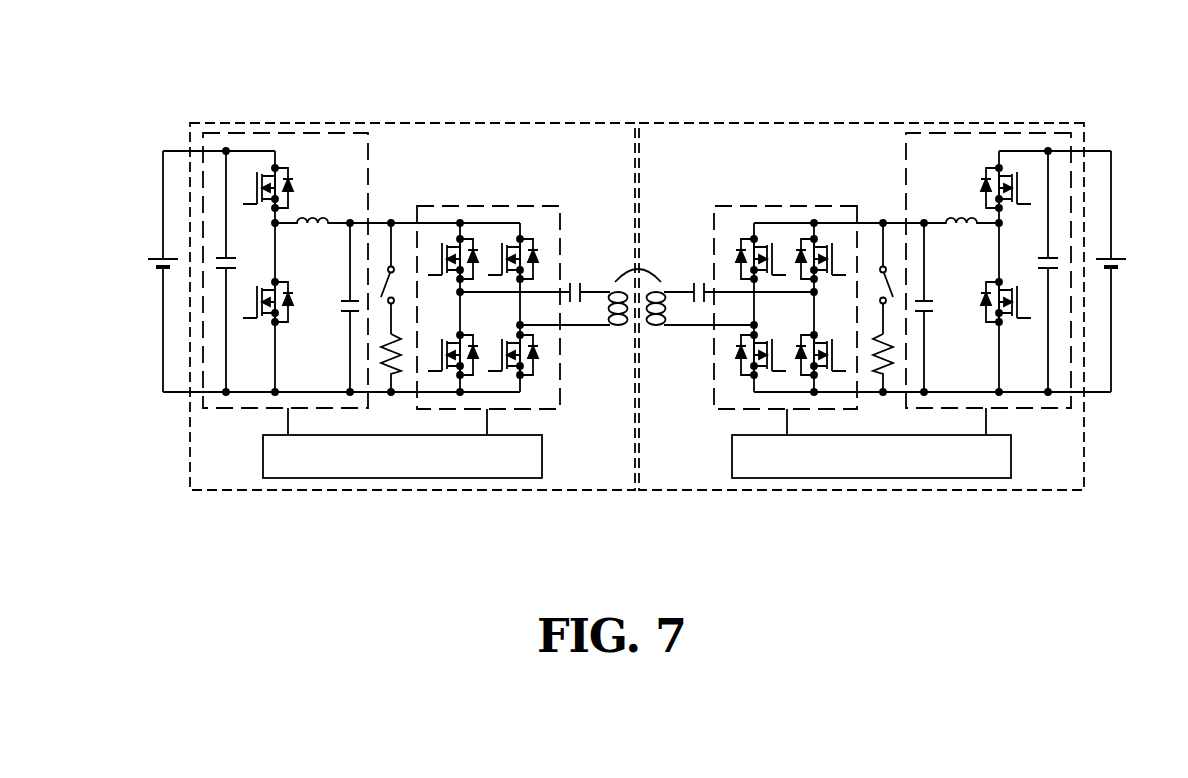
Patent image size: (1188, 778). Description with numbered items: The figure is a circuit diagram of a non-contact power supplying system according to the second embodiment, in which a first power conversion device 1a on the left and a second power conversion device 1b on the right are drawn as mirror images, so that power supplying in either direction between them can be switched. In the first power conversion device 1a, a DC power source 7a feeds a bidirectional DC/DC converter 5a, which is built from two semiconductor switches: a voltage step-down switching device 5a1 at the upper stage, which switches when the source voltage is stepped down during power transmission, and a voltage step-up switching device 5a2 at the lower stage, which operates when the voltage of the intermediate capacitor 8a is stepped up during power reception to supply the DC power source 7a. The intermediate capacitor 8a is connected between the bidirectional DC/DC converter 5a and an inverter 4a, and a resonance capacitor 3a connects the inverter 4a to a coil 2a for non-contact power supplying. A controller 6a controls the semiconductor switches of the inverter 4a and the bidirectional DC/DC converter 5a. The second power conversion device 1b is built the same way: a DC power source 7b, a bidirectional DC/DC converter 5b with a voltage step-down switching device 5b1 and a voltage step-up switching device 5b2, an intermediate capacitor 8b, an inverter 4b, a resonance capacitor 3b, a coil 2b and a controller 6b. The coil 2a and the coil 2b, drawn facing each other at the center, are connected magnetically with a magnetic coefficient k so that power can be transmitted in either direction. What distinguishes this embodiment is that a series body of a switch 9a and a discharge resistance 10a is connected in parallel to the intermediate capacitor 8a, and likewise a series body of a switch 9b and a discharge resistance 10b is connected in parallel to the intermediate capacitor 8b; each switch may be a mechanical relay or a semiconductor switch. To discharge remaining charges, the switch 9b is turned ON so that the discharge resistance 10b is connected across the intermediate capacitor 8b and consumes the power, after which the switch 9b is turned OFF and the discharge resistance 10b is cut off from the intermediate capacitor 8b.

The first power conversion device 1a is at (597, 490).
The second power conversion device 1b is at (697, 490).
The coil for non-contact power supplying 2a is at (617, 330).
The coil for non-contact power supplying 2b is at (658, 330).
The resonance capacitor 3a is at (578, 280).
The resonance capacitor 3b is at (695, 282).
The inverter 4a is at (470, 206).
The inverter 4b is at (783, 206).
The bidirectional DC/DC converter 5a is at (303, 133).
The bidirectional DC/DC converter 5b is at (960, 133).
The voltage step-down switching device 5a1 is at (265, 165).
The voltage step-up switching device 5a2 is at (257, 332).
The voltage step-down switching device 5b1 is at (1005, 165).
The voltage step-up switching device 5b2 is at (1008, 328).
The controller 6a is at (350, 478).
The controller 6b is at (853, 478).
The DC power source 7a is at (153, 257).
The DC power source 7b is at (1121, 257).
The intermediate capacitor 8a is at (345, 298).
The intermediate capacitor 8b is at (920, 298).
The switch 9a is at (388, 262).
The switch 9b is at (883, 262).
The discharge resistance 10a is at (398, 370).
The discharge resistance 10b is at (892, 370).
The magnetic coefficient k is at (638, 265).